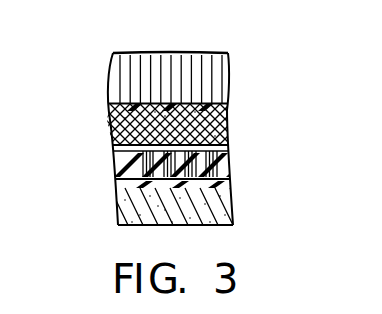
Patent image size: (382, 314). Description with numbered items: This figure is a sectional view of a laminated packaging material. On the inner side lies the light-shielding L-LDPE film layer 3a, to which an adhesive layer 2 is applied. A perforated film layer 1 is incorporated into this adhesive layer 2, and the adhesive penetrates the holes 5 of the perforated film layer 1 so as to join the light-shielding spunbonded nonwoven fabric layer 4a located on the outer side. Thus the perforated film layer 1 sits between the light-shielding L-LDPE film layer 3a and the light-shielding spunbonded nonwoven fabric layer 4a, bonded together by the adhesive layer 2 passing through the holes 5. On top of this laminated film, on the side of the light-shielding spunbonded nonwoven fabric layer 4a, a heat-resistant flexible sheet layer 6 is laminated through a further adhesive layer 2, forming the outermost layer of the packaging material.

The heat-resistant flexible sheet layer 6 is at (228, 86).
The light-shielding spunbonded nonwoven fabric layer 4a is at (228, 133).
The perforated film layer 1 is at (230, 166).
The holes 5 is at (124, 165).
The adhesive layer 2 is at (108, 106).
The light-shielding L-LDPE film layer 3a is at (233, 214).